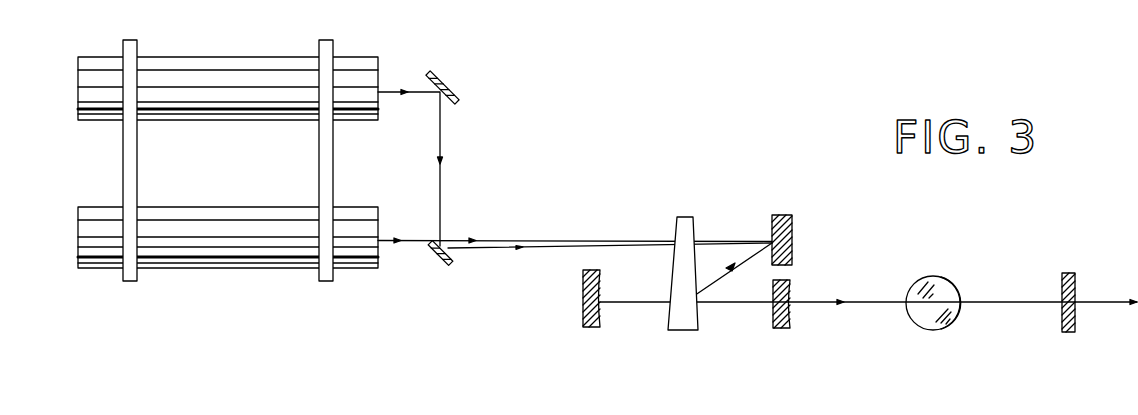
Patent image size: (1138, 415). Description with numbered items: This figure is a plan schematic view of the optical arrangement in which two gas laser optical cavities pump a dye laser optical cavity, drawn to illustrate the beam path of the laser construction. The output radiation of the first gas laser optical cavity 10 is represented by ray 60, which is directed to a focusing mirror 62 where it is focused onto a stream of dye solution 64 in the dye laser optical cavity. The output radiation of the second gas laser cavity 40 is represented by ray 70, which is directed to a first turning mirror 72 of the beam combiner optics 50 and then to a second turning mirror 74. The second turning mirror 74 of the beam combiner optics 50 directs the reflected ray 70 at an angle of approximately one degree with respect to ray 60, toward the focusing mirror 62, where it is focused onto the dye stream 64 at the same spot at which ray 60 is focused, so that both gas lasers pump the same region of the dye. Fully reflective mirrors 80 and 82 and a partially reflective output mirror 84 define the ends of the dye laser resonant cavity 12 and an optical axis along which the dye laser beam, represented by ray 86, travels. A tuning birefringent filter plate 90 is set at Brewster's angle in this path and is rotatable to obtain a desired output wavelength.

The first gas laser optical cavity 10 is at (240, 180).
The second gas laser cavity 40 is at (236, 56).
The dye laser resonant cavity 12 is at (698, 374).
The beam combiner optics 50 is at (486, 132).
The ray 60 is at (535, 206).
The ray 70 is at (394, 90).
The first turning mirror 72 is at (443, 75).
The second turning mirror 74 is at (440, 262).
The focusing mirror 62 is at (782, 215).
The stream of dye solution 64 is at (683, 216).
The fully reflective mirror 80 is at (785, 329).
The fully reflective mirror 82 is at (598, 328).
The partially reflective output mirror 84 is at (1069, 333).
The ray 86 is at (724, 303).
The tuning birefringent filter plate 90 is at (939, 332).